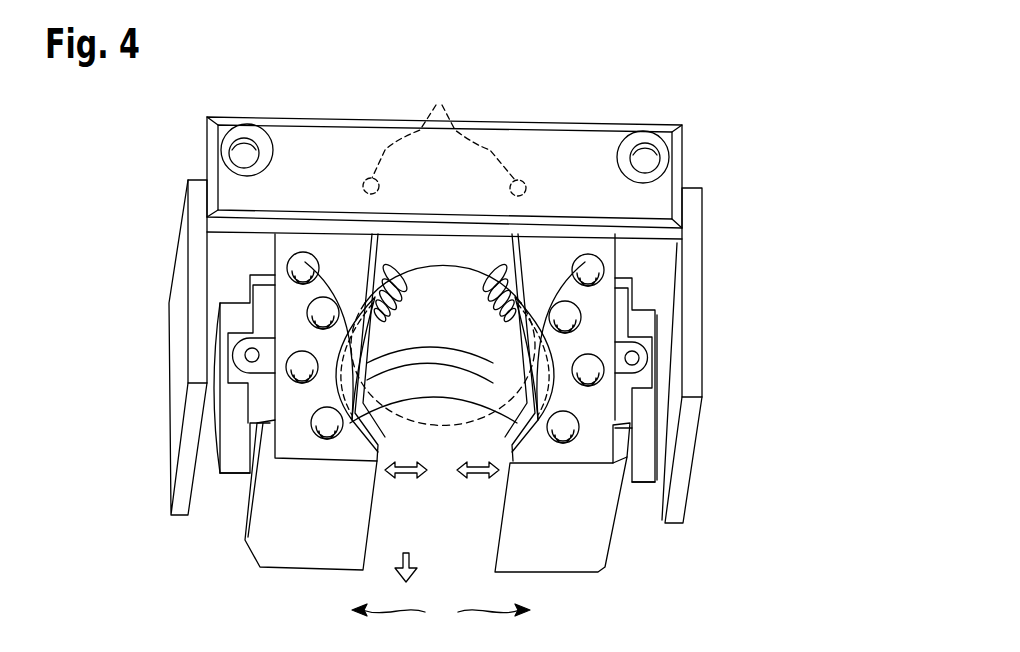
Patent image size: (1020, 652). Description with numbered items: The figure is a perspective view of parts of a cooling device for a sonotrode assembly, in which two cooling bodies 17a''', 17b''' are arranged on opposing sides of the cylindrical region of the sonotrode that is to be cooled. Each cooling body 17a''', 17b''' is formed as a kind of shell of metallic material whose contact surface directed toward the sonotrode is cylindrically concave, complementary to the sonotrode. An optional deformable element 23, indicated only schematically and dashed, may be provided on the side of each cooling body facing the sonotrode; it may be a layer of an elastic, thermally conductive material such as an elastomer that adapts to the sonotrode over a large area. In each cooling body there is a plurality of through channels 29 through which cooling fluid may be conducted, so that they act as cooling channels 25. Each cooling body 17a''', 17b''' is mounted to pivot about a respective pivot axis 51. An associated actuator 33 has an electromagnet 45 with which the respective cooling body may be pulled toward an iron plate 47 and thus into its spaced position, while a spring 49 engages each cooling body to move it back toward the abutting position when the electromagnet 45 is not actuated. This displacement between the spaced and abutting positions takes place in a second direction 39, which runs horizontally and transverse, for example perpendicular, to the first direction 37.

The cooling body 17a''' is at (232, 402).
The cooling body 17b''' is at (658, 403).
The deformable element 23 is at (442, 352).
The cooling channel 25 is at (441, 611).
The through channel 29 is at (360, 395).
The actuator 33 is at (220, 486).
The first direction 37 is at (417, 566).
The second direction 39 is at (405, 479).
The electromagnet 45 is at (230, 466).
The iron plate 47 is at (198, 347).
The spring 49 is at (487, 313).
The pivot axis 51 is at (444, 135).